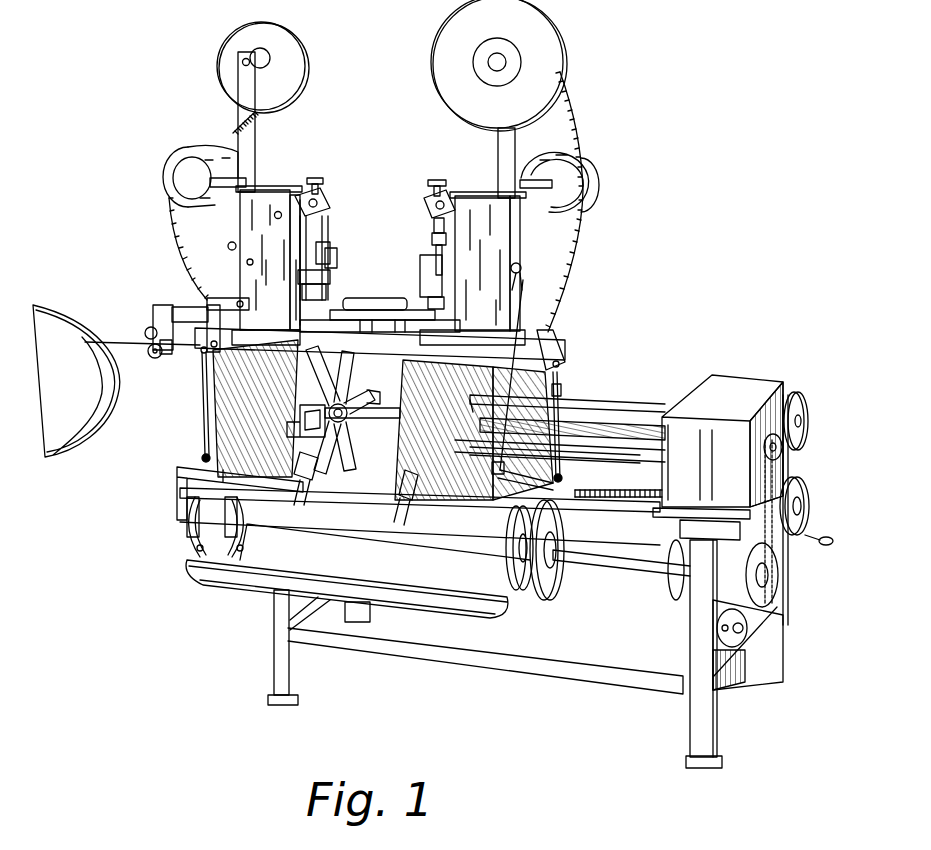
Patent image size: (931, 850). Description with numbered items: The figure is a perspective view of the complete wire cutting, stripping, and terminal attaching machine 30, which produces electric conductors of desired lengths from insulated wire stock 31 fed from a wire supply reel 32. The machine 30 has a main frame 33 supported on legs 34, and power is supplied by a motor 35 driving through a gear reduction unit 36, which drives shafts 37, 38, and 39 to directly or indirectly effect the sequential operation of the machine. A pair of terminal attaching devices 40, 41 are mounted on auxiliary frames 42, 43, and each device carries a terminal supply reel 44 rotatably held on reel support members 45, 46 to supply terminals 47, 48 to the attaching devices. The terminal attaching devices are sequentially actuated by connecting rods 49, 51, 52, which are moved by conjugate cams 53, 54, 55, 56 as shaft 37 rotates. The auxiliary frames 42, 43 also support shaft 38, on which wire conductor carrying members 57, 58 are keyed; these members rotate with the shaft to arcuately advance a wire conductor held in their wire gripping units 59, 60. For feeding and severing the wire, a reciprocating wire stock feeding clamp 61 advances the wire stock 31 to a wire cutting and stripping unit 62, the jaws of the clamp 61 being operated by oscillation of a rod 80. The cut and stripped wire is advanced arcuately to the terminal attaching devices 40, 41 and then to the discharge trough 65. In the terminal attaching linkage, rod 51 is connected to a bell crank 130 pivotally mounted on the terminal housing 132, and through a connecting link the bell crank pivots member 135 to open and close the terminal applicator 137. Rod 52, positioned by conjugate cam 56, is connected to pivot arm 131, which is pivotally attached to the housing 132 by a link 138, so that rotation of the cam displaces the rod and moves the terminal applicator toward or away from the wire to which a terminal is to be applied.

The wire cutting, stripping, and terminal attaching machine 30 is at (582, 345).
The insulated wire stock 31 is at (125, 340).
The wire supply reel 32 is at (48, 325).
The main frame 33 is at (612, 506).
The legs 34 is at (274, 632).
The motor 35 is at (772, 597).
The gear reduction unit 36 is at (752, 392).
The shaft 37 is at (610, 568).
The shaft 38 is at (570, 427).
The shaft 39 is at (626, 404).
The terminal attaching device 40 is at (257, 208).
The terminal attaching device 41 is at (466, 212).
The auxiliary frame 42 is at (235, 398).
The auxiliary frame 43 is at (453, 470).
The terminal supply reel 44 is at (270, 78).
The reel support member 45 is at (256, 140).
The reel support member 46 is at (499, 152).
The terminals 47 is at (192, 268).
The terminals 48 is at (573, 285).
The connecting rod 49 is at (203, 432).
The connecting rod 51 is at (560, 377).
The connecting rod 52 is at (565, 392).
The conjugate cam 53 is at (193, 537).
The conjugate cam 54 is at (233, 523).
The conjugate cam 55 is at (517, 562).
The conjugate cam 56 is at (550, 600).
The wire conductor carrying member 57 is at (313, 455).
The wire conductor carrying member 58 is at (411, 478).
The wire gripping unit 59 is at (300, 428).
The wire gripping unit 60 is at (398, 428).
The wire stock feeding clamp 61 is at (388, 300).
The wire cutting and stripping unit 62 is at (360, 360).
The discharge trough 65 is at (258, 582).
The rod 80 is at (398, 315).
The bell crank 130 is at (232, 248).
The pivot arm 131 is at (200, 348).
The terminal housing 132 is at (255, 228).
The member 135 is at (297, 200).
The terminal applicator 137 is at (335, 260).
The link 138 is at (225, 300).